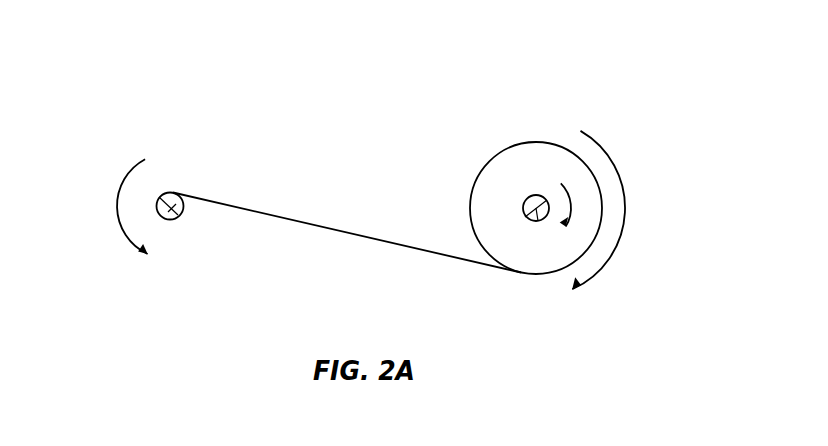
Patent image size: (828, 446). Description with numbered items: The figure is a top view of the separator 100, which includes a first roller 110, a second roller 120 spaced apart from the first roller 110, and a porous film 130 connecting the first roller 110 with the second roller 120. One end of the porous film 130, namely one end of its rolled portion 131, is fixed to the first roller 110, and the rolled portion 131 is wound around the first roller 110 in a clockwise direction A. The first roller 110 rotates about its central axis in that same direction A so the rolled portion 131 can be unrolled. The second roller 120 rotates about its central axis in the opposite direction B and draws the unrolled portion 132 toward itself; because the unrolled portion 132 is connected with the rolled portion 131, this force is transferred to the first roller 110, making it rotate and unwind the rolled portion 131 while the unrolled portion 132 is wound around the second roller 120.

The separator 100 is at (203, 90).
The first roller 110 is at (536, 203).
The second roller 120 is at (177, 218).
The porous film 130 is at (347, 225).
The rolled portion 131 is at (533, 162).
The unrolled portion 132 is at (360, 238).